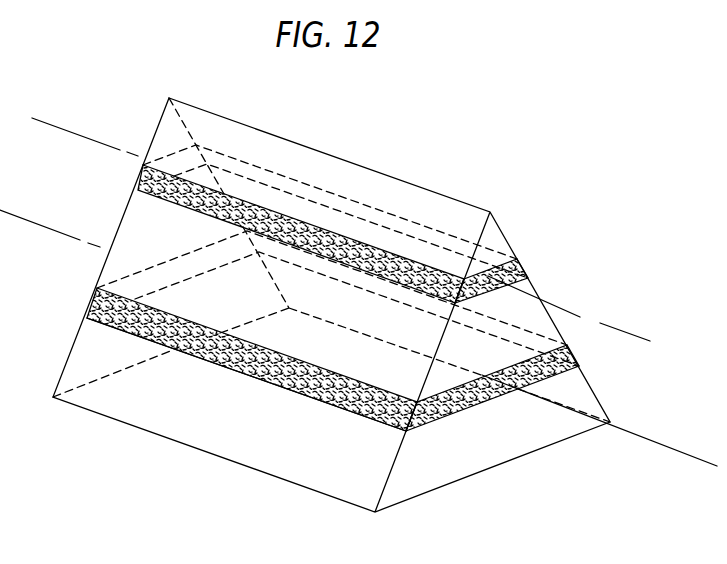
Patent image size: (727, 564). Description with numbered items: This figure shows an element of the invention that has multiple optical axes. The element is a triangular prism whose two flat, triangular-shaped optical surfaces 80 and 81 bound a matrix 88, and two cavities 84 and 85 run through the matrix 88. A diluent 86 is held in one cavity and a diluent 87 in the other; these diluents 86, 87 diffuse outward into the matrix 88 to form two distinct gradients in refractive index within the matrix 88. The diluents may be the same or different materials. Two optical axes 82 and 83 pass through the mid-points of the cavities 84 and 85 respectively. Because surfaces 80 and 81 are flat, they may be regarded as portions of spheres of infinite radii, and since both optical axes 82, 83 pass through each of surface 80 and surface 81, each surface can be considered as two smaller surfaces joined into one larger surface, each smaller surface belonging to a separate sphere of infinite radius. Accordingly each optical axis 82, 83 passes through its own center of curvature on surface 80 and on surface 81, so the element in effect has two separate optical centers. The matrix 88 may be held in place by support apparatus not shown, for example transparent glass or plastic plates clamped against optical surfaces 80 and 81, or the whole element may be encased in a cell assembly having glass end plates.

The triangular-shaped optical surface 80 is at (485, 470).
The triangular-shaped optical surface 81 is at (168, 127).
The optical axis 82 is at (655, 443).
The optical axis 83 is at (610, 320).
The cavity 84 is at (207, 357).
The cavity 85 is at (427, 278).
The diluent 86 is at (368, 412).
The diluent 87 is at (320, 237).
The matrix 88 is at (133, 237).